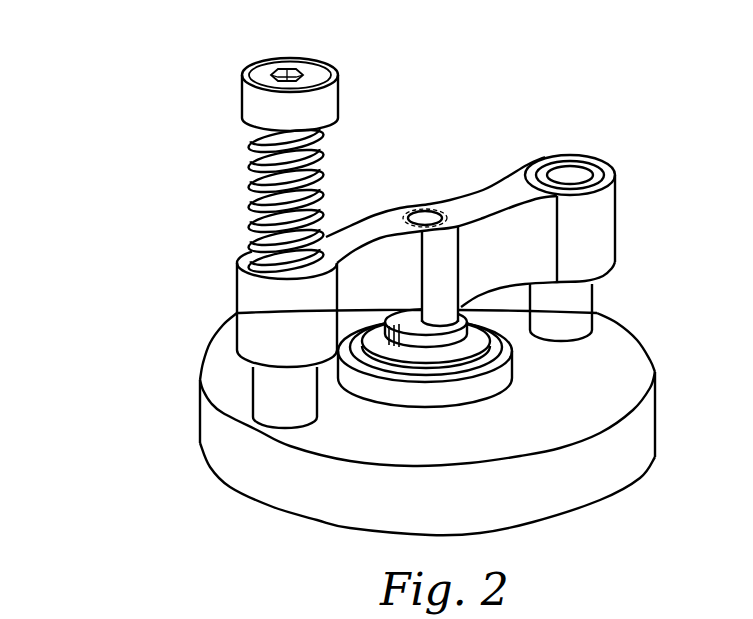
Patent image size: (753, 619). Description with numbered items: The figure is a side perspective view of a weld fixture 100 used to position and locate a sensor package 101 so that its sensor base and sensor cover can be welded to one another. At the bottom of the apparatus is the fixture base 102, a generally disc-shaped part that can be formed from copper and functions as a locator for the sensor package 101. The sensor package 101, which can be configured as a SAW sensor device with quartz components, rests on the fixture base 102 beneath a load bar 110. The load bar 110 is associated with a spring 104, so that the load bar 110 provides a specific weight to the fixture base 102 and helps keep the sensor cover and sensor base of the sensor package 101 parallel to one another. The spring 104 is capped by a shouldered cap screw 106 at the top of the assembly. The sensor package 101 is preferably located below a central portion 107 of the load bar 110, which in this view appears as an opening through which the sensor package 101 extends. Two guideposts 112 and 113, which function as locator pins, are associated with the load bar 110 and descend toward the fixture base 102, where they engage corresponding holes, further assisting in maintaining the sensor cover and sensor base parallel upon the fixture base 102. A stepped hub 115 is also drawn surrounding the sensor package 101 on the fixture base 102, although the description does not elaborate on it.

The weld fixture 100 is at (100, 88).
The sensor package 101 is at (500, 323).
The fixture base 102 is at (213, 433).
The spring 104 is at (250, 183).
The shouldered cap screw 106 is at (243, 108).
The central portion 107 is at (425, 216).
The load bar 110 is at (503, 191).
The guidepost 112 is at (583, 300).
The guidepost 113 is at (258, 387).
The hub 115 is at (443, 393).